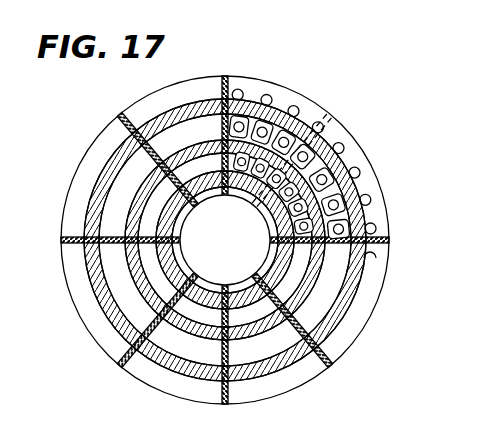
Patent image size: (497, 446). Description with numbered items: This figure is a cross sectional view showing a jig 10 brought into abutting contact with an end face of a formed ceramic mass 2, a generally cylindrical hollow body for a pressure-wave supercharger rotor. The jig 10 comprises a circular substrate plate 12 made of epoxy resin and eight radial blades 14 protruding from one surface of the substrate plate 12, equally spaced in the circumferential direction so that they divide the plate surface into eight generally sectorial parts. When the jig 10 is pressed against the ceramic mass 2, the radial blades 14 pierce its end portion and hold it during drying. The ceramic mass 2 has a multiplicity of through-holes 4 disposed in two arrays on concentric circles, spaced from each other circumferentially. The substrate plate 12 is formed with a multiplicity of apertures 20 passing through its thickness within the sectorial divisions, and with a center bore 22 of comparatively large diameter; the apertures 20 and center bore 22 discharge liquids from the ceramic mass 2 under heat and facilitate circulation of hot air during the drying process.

The jig 10 is at (369, 141).
The formed ceramic mass 2 is at (354, 213).
The through-holes 4 is at (330, 175).
The substrate plate 12 is at (278, 96).
The radial blades 14 is at (320, 130).
The apertures 20 is at (302, 133).
The center bore 22 is at (240, 197).